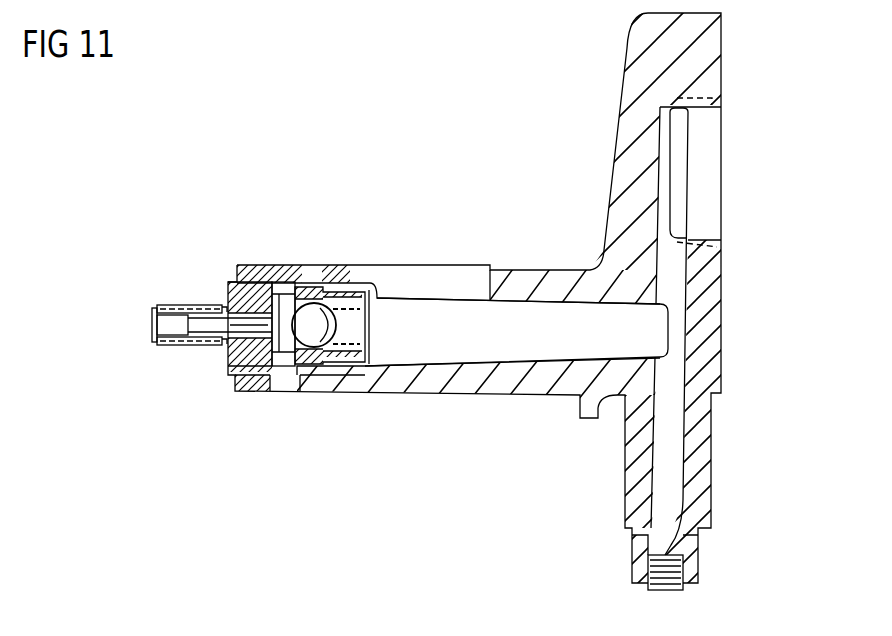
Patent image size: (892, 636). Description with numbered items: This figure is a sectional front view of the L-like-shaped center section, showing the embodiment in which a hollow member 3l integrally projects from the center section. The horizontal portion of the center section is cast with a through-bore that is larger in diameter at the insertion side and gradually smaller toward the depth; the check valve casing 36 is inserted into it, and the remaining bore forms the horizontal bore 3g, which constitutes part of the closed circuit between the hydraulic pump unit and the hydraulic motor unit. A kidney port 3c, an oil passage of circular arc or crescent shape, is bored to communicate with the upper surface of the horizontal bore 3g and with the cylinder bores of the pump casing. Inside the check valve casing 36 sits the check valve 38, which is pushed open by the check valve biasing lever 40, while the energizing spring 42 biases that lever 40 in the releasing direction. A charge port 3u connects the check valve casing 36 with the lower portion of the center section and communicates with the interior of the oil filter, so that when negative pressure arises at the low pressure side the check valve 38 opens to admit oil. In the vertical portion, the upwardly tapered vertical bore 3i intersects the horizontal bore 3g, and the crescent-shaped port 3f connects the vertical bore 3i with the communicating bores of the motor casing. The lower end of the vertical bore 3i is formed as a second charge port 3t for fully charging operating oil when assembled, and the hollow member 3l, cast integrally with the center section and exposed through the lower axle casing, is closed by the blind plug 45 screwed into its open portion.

The check valve biasing lever 40 is at (151, 319).
The energizing spring 42 is at (213, 343).
The check valve casing 36 is at (228, 285).
The check valve 38 is at (326, 303).
The kidney port 3c is at (438, 266).
The horizontal bore 3g is at (468, 338).
The charge port 3u is at (282, 392).
The kidney port 3f is at (705, 112).
The vertical bore 3i is at (677, 277).
The hollow member 3l is at (623, 433).
The second charge port 3t is at (660, 435).
The blind plug 45 is at (688, 505).